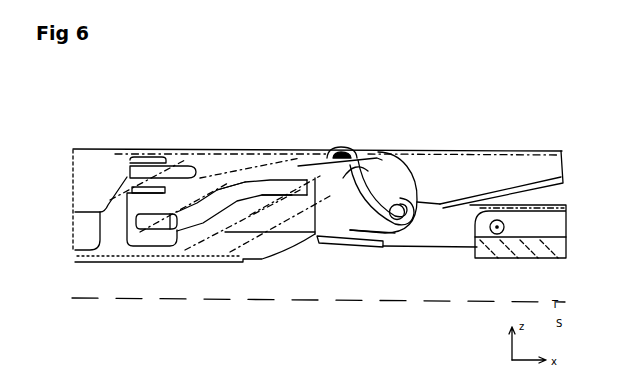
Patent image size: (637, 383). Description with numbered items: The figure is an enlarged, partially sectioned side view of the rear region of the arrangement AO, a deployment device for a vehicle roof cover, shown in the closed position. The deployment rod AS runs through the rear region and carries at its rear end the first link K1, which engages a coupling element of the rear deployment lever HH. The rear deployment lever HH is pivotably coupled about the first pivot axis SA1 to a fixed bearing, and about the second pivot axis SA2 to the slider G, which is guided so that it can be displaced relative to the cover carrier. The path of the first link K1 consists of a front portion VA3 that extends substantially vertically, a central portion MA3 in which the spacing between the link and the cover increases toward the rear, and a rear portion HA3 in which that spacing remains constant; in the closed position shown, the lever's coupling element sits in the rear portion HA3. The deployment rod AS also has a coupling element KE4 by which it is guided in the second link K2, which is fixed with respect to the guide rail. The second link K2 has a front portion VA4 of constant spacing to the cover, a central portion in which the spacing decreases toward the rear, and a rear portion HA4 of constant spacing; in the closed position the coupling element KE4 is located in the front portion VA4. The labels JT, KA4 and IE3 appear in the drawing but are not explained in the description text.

The arrangement AO is at (502, 42).
The top plate JT is at (478, 152).
The deployment rod AS is at (122, 256).
The slider G is at (270, 251).
The front portion VA4 is at (166, 209).
The coupling element KE4 is at (165, 229).
The second link K2 is at (237, 208).
The coupling arm 4 KA4 is at (229, 187).
The rear portion HA4 is at (285, 206).
The central portion MA3 is at (363, 222).
The front portion VA3 is at (336, 148).
The rear portion HA3 is at (403, 231).
The first link K1 is at (364, 199).
The insert element 3 IE3 is at (415, 213).
The second pivot axis SA2 is at (354, 239).
The rear deployment lever HH is at (447, 243).
The first pivot axis SA1 is at (505, 223).